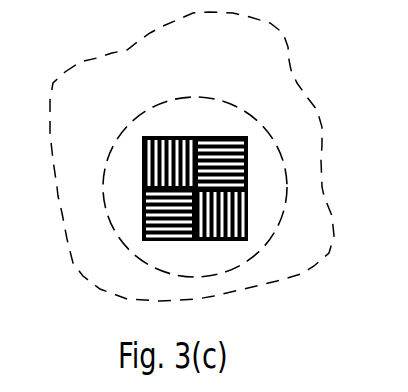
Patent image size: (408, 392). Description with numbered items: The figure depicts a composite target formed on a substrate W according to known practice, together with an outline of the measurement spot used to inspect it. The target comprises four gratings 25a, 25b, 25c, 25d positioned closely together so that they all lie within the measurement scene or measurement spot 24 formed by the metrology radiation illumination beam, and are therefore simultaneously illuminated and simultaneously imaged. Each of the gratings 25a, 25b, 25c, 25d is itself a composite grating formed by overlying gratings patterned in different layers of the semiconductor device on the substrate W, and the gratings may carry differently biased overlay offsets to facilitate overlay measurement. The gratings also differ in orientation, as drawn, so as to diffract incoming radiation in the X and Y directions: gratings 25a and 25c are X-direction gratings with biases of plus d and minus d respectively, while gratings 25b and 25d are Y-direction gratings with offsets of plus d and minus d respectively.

The substrate W is at (119, 47).
The measurement spot 24 is at (140, 110).
The grating 25a is at (143, 172).
The grating 25b is at (143, 223).
The grating 25c is at (247, 218).
The grating 25d is at (247, 162).